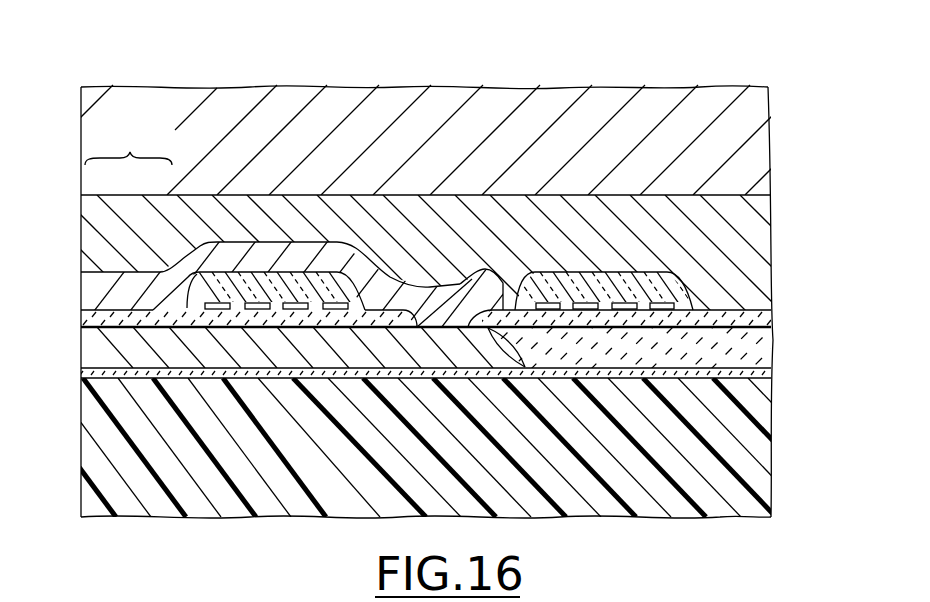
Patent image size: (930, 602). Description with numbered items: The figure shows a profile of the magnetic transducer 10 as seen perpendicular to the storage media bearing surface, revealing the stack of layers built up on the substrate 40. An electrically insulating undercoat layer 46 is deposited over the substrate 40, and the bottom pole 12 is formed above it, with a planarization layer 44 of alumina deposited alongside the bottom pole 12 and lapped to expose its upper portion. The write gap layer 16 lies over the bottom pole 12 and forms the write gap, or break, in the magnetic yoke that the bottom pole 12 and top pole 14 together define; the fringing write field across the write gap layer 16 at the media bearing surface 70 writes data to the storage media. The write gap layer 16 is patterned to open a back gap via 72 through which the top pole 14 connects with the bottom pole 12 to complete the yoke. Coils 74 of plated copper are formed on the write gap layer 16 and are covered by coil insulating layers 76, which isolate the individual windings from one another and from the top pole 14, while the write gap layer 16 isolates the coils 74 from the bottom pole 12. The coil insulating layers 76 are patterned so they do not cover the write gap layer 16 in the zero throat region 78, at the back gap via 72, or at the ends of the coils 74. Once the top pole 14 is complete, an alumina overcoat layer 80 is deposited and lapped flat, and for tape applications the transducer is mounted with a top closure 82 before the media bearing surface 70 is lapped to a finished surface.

The magnetic transducer 10 is at (708, 41).
The bottom pole 12 is at (392, 357).
The top pole 14 is at (88, 283).
The write gap layer 16 is at (775, 311).
The substrate 40 is at (768, 448).
The planarization layer 44 is at (775, 340).
The undercoat layer 46 is at (773, 373).
The media bearing surface 70 is at (76, 231).
The back gap via 72 is at (434, 309).
The coils 74 is at (327, 298).
The coil insulating layers 76 is at (230, 298).
The zero throat region 78 is at (128, 142).
The overcoat layer 80 is at (765, 227).
The top closure 82 is at (766, 108).